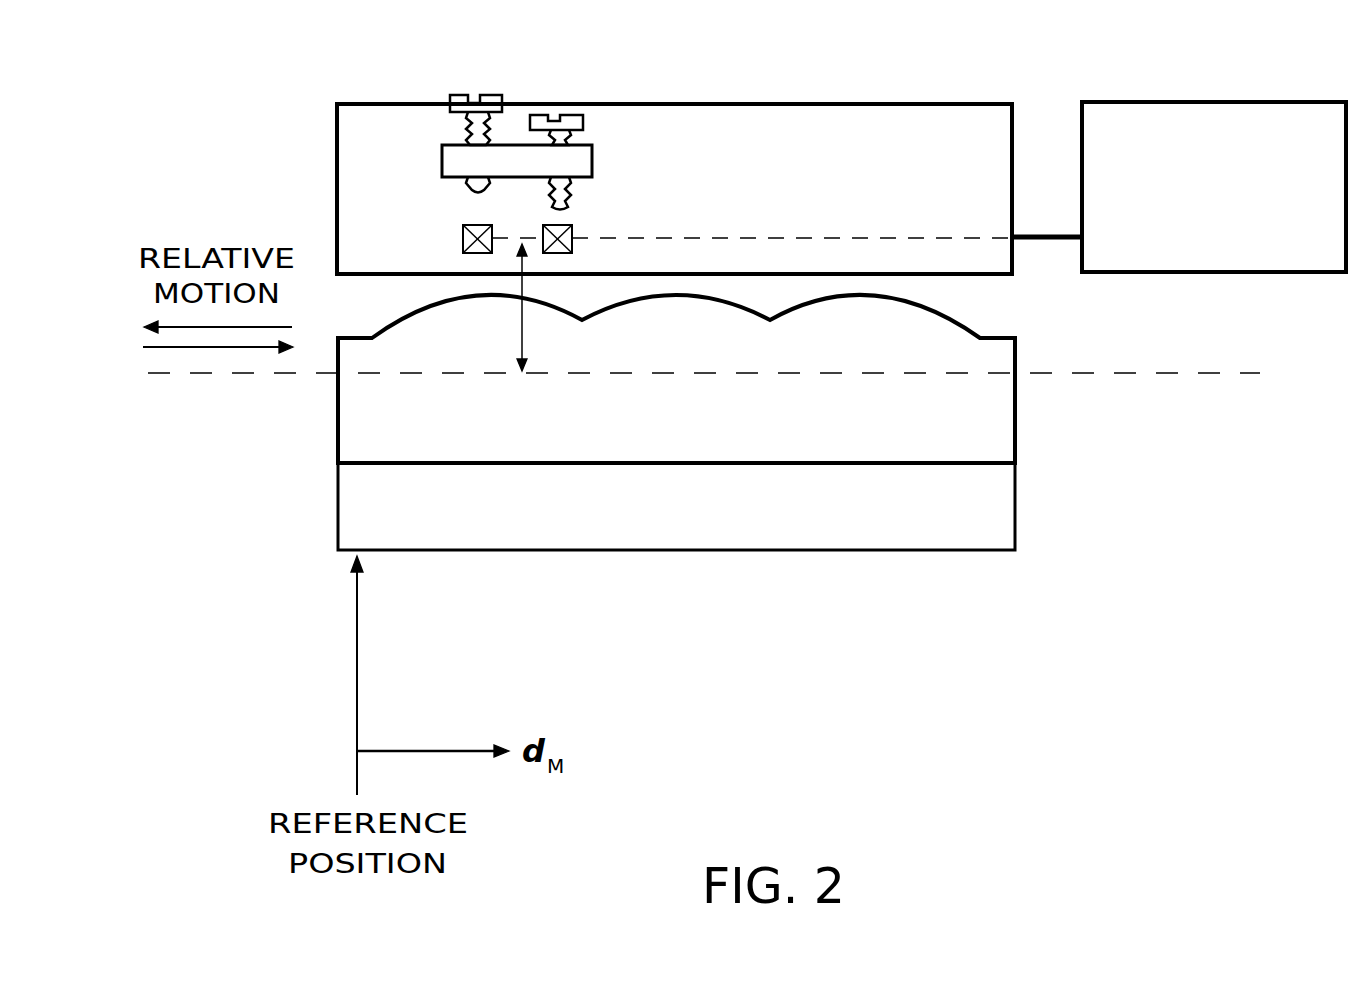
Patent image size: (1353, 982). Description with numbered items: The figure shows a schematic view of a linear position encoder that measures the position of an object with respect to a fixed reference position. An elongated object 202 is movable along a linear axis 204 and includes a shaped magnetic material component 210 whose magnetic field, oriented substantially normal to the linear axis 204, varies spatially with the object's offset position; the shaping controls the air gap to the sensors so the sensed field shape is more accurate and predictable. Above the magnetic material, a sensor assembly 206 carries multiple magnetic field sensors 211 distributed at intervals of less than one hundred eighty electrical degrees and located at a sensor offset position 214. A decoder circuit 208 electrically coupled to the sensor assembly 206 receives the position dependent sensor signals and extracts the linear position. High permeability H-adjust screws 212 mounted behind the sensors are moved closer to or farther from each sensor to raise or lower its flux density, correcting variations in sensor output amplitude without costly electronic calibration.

The elongated object 202 is at (400, 530).
The linear axis 204 is at (1110, 372).
The sensor assembly 206 is at (927, 122).
The decoder circuit 208 is at (1217, 118).
The magnetic material component 210 is at (967, 418).
The magnetic field sensors 211 is at (463, 230).
The H-adjust screws 212 is at (461, 103).
The sensor offset position 214 is at (523, 338).